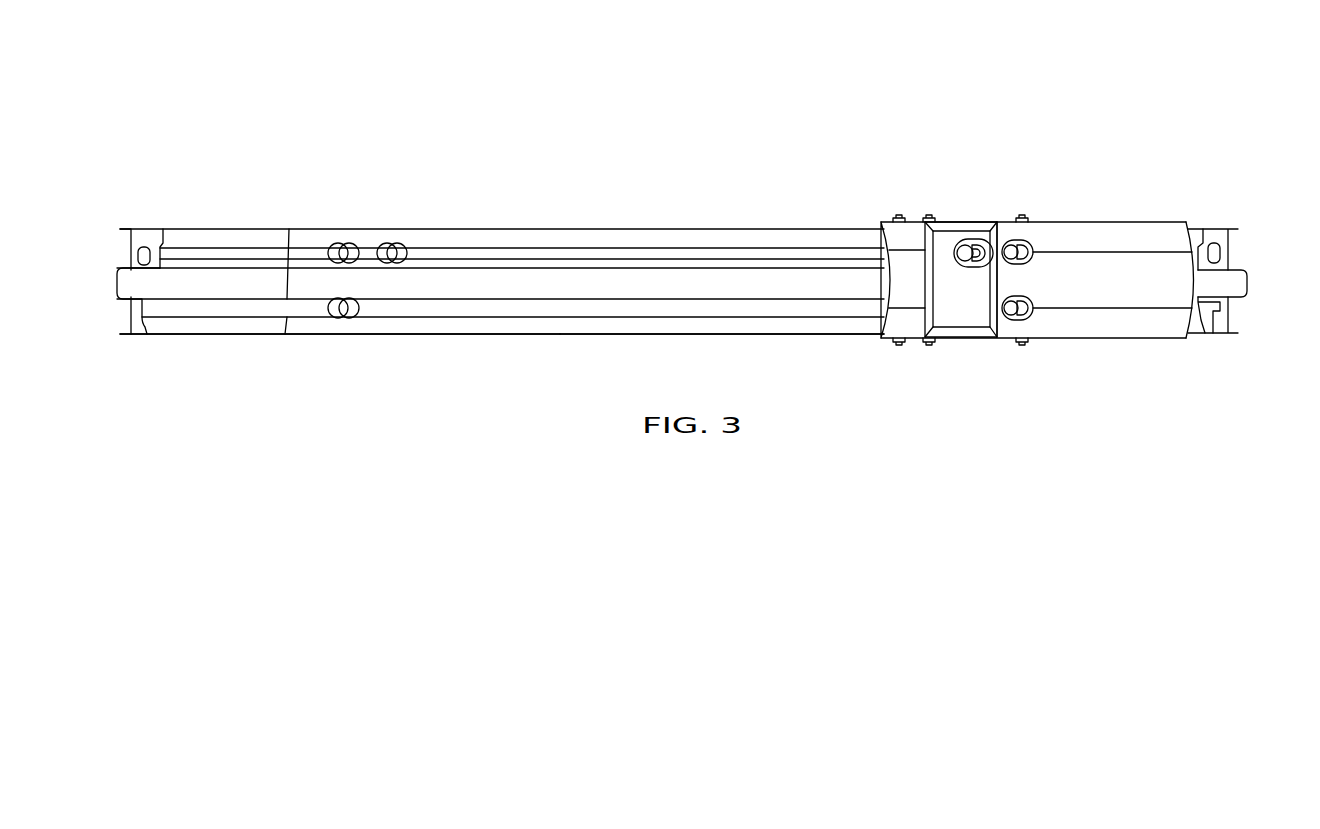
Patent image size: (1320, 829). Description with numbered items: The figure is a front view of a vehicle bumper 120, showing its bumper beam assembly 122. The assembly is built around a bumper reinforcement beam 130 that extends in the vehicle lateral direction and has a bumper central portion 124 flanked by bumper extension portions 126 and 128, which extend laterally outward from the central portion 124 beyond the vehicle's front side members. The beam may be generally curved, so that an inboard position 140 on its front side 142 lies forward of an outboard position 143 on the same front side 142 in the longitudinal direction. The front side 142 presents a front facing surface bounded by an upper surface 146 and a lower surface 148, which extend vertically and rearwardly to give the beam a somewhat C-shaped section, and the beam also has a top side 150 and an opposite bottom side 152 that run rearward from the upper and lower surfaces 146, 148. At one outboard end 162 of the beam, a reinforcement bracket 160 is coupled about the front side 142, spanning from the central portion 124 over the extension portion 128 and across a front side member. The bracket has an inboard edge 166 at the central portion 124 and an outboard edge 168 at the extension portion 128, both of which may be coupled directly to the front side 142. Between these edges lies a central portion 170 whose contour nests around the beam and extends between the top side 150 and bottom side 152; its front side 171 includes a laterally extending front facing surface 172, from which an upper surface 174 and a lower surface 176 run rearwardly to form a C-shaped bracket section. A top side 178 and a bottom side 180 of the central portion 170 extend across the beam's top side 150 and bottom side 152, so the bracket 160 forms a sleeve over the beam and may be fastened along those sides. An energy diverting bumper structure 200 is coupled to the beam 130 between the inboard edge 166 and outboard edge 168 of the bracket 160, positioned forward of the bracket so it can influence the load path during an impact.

The bumper 120 is at (887, 133).
The bumper beam assembly 122 is at (432, 356).
The bumper central portion 124 is at (655, 205).
The bumper extension portion 126 is at (144, 158).
The bumper extension portion 128 is at (1192, 155).
The bumper reinforcement beam 130 is at (624, 288).
The inboard position 140 is at (699, 288).
The front side 142 is at (528, 320).
The outboard position 143 is at (307, 288).
The upper surface 146 is at (215, 238).
The lower surface 148 is at (207, 327).
The top side 150 is at (396, 228).
The bottom side 152 is at (760, 335).
The reinforcement bracket 160 is at (1142, 352).
The outboard end 162 is at (1254, 266).
The inboard edge 166 is at (884, 283).
The outboard edge 168 is at (1197, 242).
The central portion 170 is at (1047, 240).
The front side 171 is at (1073, 286).
The front facing surface 172 is at (1167, 295).
The upper surface 174 is at (1095, 240).
The lower surface 176 is at (1103, 330).
The top side 178 is at (1010, 224).
The bottom side 180 is at (1005, 340).
The energy diverting bumper structure 200 is at (905, 350).